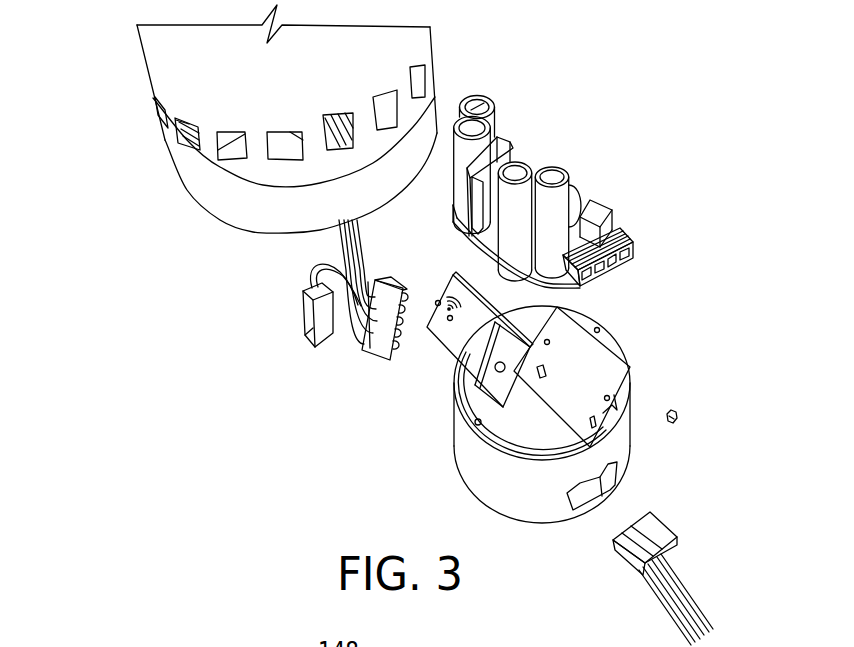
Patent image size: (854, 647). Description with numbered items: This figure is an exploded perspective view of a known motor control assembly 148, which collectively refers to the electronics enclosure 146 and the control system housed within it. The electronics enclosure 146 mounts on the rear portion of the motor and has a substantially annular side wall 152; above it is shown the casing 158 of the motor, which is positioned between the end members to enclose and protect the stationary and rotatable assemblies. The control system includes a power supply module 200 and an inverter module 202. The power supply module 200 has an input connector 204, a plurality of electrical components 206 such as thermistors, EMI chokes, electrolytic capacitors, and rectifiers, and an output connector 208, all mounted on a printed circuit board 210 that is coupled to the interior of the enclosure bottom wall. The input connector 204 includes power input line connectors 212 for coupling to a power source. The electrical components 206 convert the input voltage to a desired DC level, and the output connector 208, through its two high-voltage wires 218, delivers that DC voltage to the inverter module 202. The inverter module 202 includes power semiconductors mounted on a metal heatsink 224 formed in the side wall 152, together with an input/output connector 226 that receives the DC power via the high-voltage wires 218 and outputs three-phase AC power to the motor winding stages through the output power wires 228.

The casing 158 is at (147, 77).
The electrical components 206 is at (515, 170).
The power supply module 200 is at (552, 174).
The input connector 204 is at (620, 233).
The output power wires 228 is at (360, 233).
The printed circuit board 210 is at (480, 242).
The output connector 208 is at (307, 303).
The high-voltage wires 218 is at (343, 346).
The input/output connector 226 is at (362, 360).
The inverter module 202 is at (457, 337).
The metal heatsink 224 is at (593, 364).
The motor control assembly 148 is at (508, 417).
The electronics enclosure 146 is at (457, 449).
The side wall 152 is at (503, 482).
The power input line connectors 212 is at (675, 580).